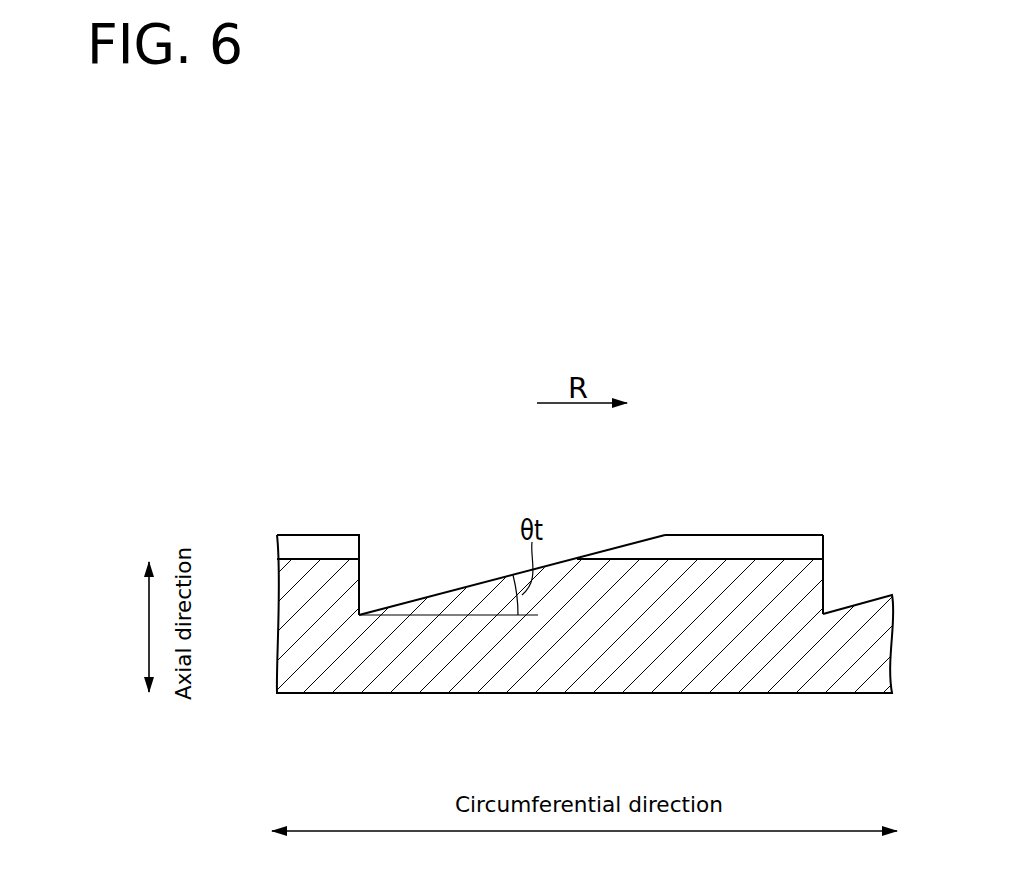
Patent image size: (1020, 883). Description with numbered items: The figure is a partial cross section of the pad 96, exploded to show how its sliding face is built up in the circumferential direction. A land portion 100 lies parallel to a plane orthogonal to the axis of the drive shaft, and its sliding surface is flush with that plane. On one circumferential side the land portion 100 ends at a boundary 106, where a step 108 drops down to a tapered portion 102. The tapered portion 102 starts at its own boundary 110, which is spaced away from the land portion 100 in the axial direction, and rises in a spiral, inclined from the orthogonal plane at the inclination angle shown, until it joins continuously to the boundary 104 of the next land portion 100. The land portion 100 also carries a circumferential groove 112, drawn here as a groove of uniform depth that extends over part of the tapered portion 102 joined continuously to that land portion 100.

The rotor body 96 is at (878, 518).
The land portion 100 is at (800, 535).
The tapered portion 102 is at (473, 583).
The boundary 104 is at (665, 535).
The boundary 106 is at (360, 533).
The step 108 is at (360, 570).
The boundary 110 is at (360, 613).
The circumferential groove 112 is at (735, 545).